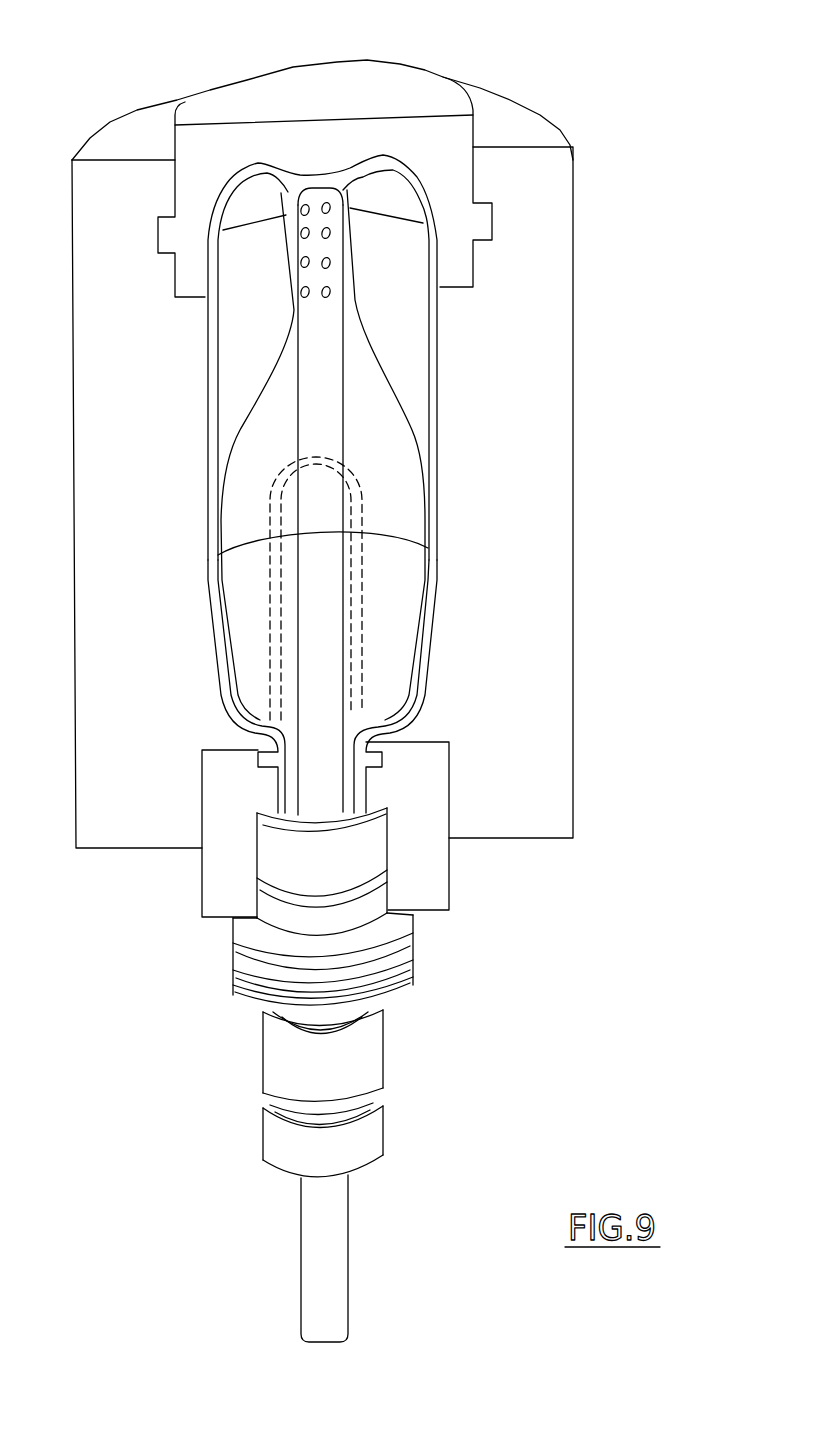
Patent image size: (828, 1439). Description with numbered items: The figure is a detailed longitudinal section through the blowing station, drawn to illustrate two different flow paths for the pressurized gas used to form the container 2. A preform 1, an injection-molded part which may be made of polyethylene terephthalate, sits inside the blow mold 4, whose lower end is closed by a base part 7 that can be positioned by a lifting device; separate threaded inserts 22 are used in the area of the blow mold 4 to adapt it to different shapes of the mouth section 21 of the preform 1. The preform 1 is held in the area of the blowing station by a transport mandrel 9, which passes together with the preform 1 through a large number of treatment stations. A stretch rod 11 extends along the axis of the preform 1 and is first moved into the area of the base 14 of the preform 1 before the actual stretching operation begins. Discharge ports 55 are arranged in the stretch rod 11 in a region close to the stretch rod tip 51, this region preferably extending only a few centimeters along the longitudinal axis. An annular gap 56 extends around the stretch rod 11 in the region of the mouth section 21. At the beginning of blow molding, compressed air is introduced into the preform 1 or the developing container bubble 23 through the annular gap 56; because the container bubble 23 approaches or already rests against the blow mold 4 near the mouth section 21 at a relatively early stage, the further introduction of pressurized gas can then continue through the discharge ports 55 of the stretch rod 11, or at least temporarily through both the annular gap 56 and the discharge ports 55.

The preform 1 is at (368, 627).
The container 2 is at (440, 397).
The blow mold 4 is at (530, 467).
The base part 7 is at (412, 78).
The transport mandrel 9 is at (403, 982).
The stretch rod 11 is at (302, 1272).
The base 14 is at (346, 462).
The mouth section 21 is at (370, 773).
The threaded insert 22 is at (430, 867).
The container bubble 23 is at (372, 355).
The stretch rod tip 51 is at (319, 188).
The discharge ports 55 is at (285, 186).
The annular gap 56 is at (290, 790).